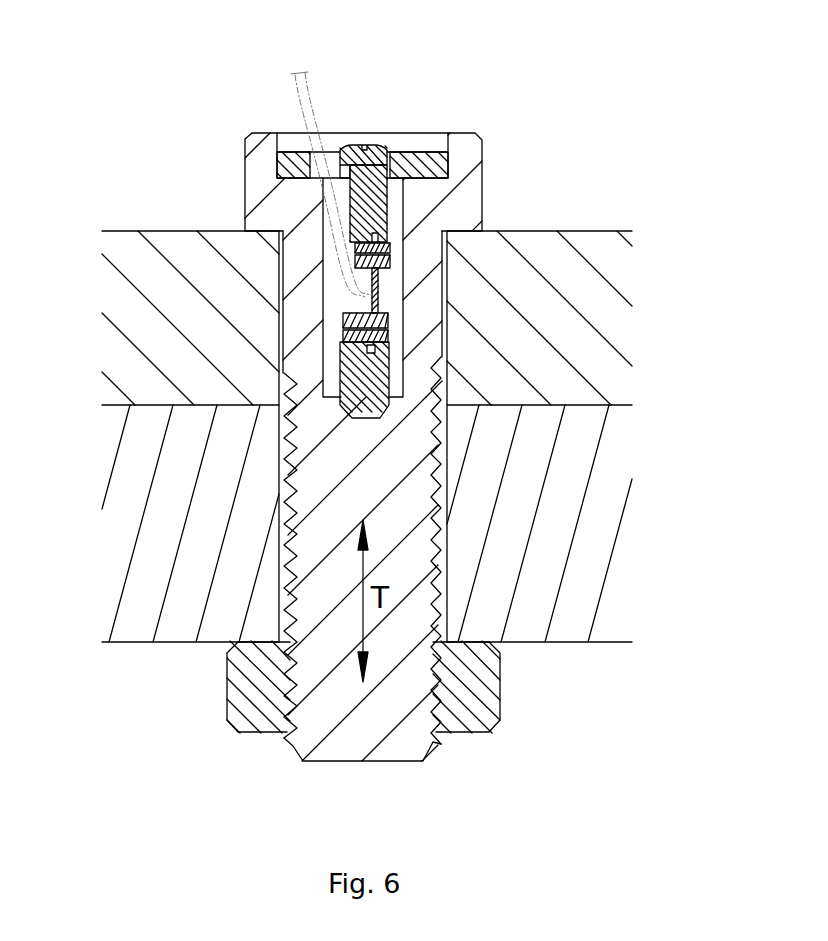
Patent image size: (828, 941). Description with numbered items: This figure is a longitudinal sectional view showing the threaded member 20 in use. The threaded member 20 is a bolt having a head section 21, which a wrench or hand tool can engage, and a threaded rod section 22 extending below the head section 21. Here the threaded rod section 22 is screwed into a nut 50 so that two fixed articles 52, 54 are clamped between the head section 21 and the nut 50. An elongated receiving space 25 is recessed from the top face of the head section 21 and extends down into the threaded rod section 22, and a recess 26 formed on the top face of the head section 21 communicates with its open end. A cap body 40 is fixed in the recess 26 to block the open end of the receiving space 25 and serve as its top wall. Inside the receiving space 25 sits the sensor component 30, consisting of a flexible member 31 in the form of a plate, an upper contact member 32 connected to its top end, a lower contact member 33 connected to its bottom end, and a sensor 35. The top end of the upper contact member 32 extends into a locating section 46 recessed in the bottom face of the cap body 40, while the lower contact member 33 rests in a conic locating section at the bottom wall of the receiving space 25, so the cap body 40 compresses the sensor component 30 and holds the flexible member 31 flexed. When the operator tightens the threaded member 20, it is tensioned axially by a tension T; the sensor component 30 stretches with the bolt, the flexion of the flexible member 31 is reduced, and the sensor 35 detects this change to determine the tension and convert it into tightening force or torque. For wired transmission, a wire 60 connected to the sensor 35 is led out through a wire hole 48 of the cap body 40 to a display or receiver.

The threaded member 20 is at (414, 410).
The head section 21 is at (482, 185).
The threaded rod section 22 is at (430, 603).
The receiving space 25 is at (327, 227).
The recess 26 is at (278, 162).
The sensor component 30 is at (369, 291).
The flexible member 31 is at (365, 300).
The upper contact member 32 is at (380, 218).
The lower contact member 33 is at (373, 388).
The sensor 35 is at (380, 297).
The cap body 40 is at (420, 158).
The locating section 46 is at (347, 158).
The wire hole 48 is at (290, 153).
The nut 50 is at (227, 685).
The fixed article 52 is at (572, 273).
The fixed article 54 is at (598, 527).
The wire 60 is at (312, 100).